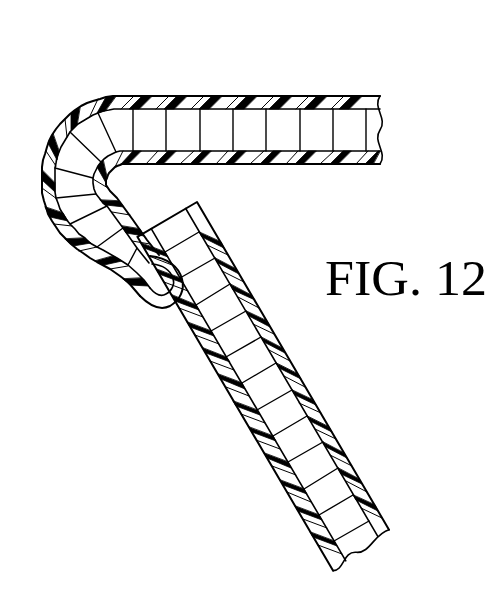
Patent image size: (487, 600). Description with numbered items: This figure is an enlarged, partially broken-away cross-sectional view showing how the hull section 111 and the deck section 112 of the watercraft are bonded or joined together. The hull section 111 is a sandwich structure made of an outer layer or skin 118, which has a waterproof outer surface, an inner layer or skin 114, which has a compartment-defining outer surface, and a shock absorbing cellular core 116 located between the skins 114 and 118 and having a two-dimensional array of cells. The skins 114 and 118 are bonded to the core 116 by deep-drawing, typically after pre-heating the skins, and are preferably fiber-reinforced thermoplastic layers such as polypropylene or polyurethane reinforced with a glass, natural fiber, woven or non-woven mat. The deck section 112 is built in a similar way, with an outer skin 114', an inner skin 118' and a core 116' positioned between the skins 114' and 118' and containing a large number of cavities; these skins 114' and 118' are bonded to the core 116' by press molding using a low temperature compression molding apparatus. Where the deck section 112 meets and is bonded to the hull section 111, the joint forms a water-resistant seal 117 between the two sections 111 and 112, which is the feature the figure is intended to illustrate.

The hull section 111 is at (300, 516).
The deck section 112 is at (66, 118).
The inner layer or skin 114 is at (298, 373).
The shock absorbing cellular core 116 is at (288, 386).
The outer layer or skin 118 is at (243, 395).
The outer skin 114' is at (211, 156).
The core 116' is at (226, 152).
The inner skin 118' is at (245, 207).
The water-resistant seal 117 is at (183, 297).